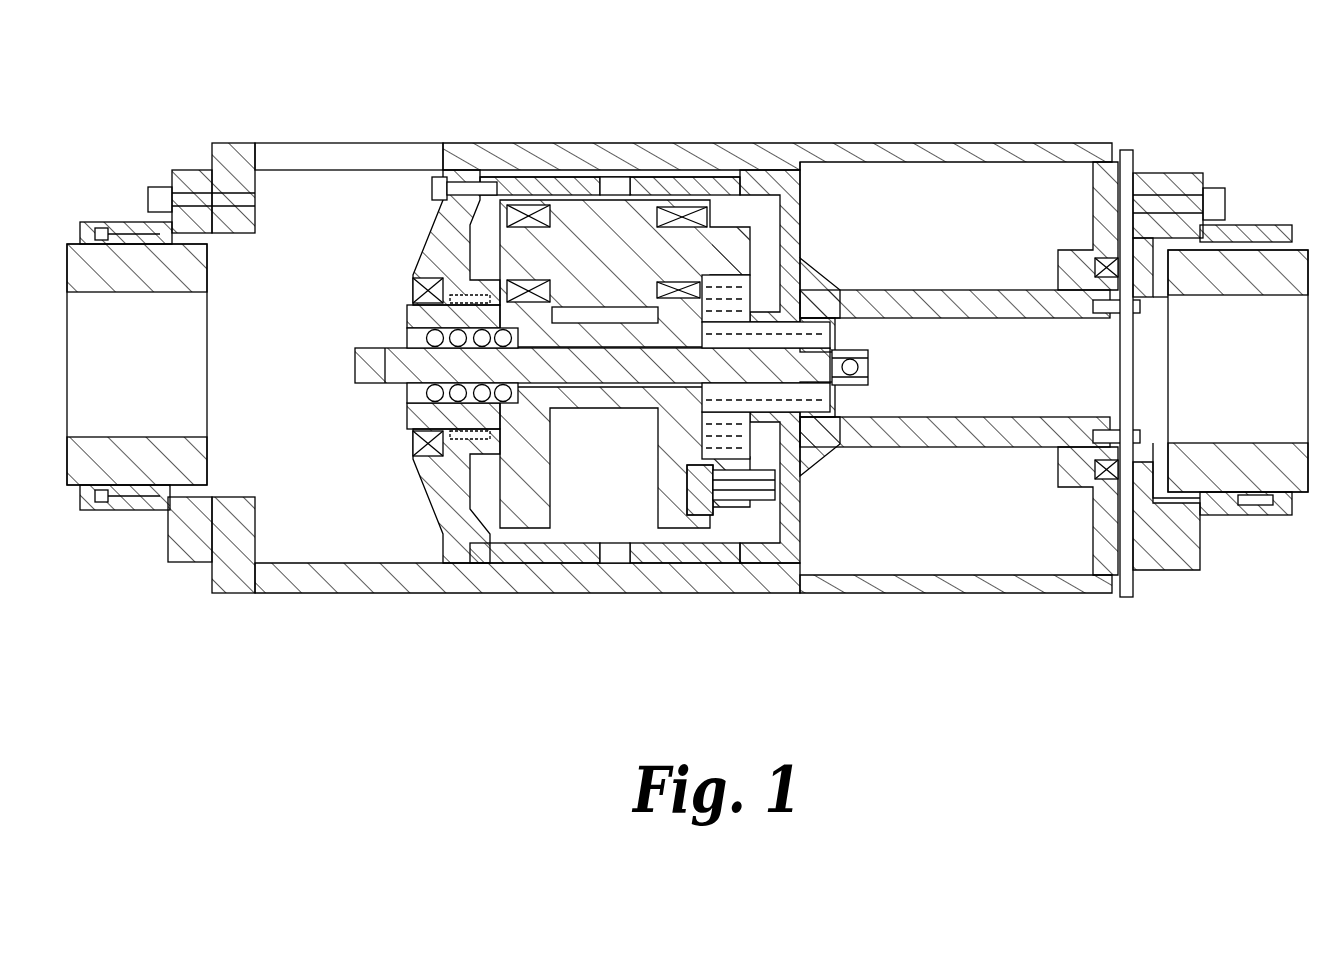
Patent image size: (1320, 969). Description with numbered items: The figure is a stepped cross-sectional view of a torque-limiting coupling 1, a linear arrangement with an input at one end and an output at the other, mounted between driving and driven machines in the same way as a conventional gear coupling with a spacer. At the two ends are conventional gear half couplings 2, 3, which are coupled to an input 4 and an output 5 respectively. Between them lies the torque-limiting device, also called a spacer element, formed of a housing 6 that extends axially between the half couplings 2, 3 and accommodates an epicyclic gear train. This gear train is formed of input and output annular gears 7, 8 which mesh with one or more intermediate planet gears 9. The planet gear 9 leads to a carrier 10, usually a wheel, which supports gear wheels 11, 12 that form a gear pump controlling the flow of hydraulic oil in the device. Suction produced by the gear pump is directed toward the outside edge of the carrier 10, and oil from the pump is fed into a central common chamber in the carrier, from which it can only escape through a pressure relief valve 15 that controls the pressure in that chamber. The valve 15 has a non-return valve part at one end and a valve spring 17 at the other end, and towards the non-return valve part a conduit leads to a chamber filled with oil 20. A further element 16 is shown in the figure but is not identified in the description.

The torque-limiting coupling 1 is at (687, 359).
The gear half coupling 2 is at (192, 186).
The gear half coupling 3 is at (1145, 228).
The input 4 is at (118, 264).
The output 5 is at (1244, 325).
The housing 6 is at (983, 142).
The input annular gear 7 is at (567, 185).
The output annular gear 8 is at (633, 182).
The planet gear 9 is at (612, 227).
The carrier 10 is at (695, 515).
The gear wheel 11 is at (732, 245).
The gear wheel 12 is at (735, 500).
The pressure relief valve 15 is at (620, 372).
The small bearing 16 is at (867, 374).
The valve spring 17 is at (465, 397).
The chamber filled with oil 20 is at (722, 332).